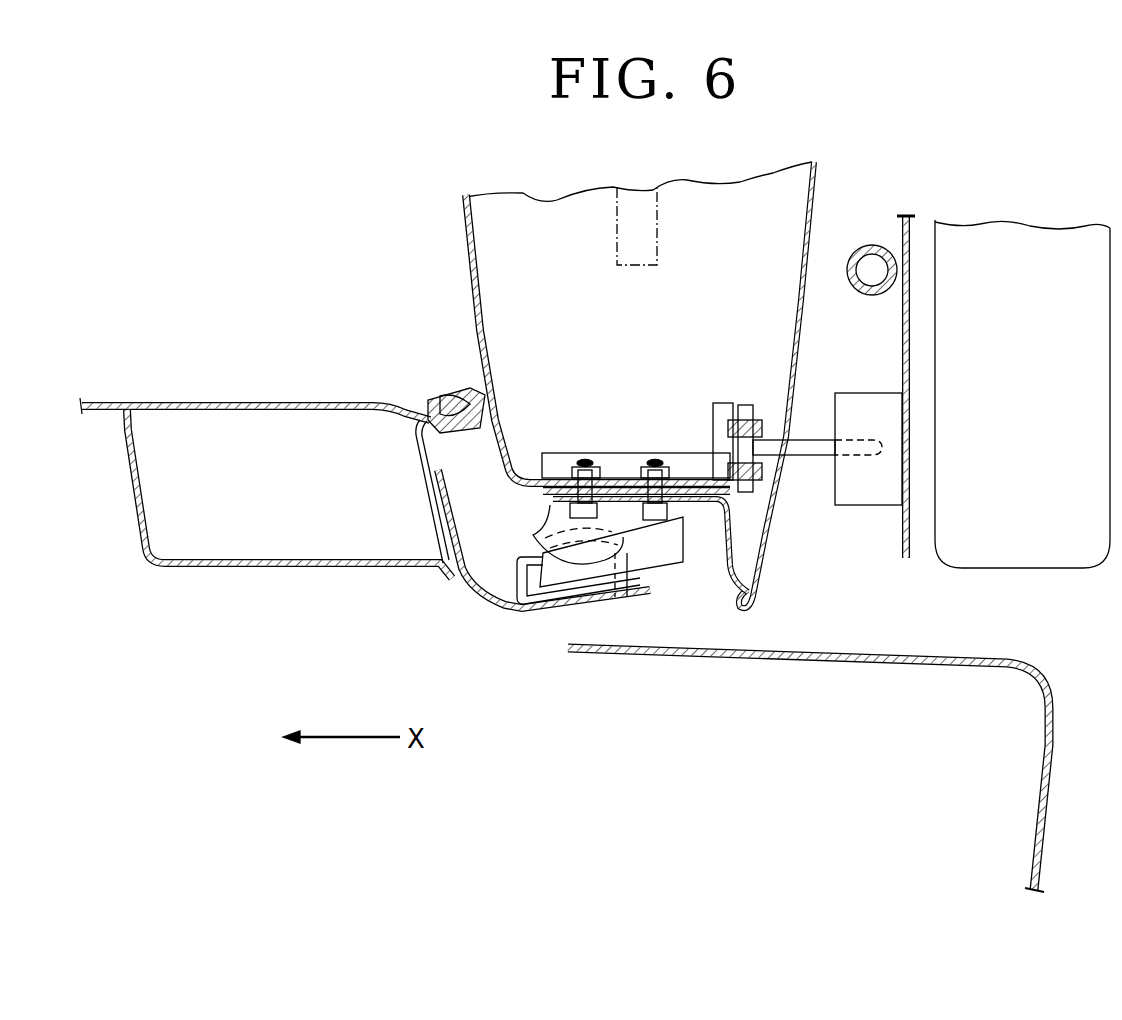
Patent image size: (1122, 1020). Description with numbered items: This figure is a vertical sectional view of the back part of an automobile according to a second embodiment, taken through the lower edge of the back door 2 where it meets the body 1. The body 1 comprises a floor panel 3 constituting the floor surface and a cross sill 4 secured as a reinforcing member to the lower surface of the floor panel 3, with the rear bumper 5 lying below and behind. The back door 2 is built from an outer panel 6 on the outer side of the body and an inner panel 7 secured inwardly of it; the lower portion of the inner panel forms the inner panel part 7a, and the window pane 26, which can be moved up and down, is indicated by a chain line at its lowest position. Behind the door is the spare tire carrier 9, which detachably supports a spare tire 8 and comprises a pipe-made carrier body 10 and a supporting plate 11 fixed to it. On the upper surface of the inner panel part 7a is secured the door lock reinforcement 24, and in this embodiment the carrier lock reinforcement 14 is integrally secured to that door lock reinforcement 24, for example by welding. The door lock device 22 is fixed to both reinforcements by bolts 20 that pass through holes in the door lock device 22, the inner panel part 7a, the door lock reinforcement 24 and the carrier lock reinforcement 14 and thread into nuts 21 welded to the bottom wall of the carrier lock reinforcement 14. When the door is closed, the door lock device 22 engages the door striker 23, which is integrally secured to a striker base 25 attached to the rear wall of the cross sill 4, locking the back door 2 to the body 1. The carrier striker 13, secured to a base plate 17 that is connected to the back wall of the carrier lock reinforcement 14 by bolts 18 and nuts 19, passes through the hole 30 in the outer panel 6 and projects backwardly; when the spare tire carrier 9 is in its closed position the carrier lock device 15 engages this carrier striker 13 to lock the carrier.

The body 1 is at (146, 398).
The back door 2 is at (822, 207).
The floor panel 3 is at (266, 402).
The cross sill 4 is at (333, 567).
The rear bumper 5 is at (872, 662).
The outer panel 6 is at (814, 248).
The inner panel 7 is at (465, 262).
The inner panel part 7a is at (600, 478).
The spare tire 8 is at (1057, 568).
The spare tire carrier 9 is at (902, 566).
The carrier body 10 is at (882, 297).
The supporting plate 11 is at (910, 236).
The carrier striker 13 is at (812, 456).
The carrier lock reinforcement 14 is at (609, 453).
The carrier lock device 15 is at (873, 505).
The base plate 17 is at (750, 402).
The bolts 18 is at (765, 414).
The nuts 19 is at (737, 405).
The bolts 20 is at (535, 537).
The nuts 21 is at (556, 455).
The door lock device 22 is at (672, 578).
The door striker 23 is at (528, 608).
The door lock reinforcement 24 is at (700, 470).
The striker base 25 is at (479, 590).
The window pane 26 is at (657, 258).
The hole 30 is at (786, 460).